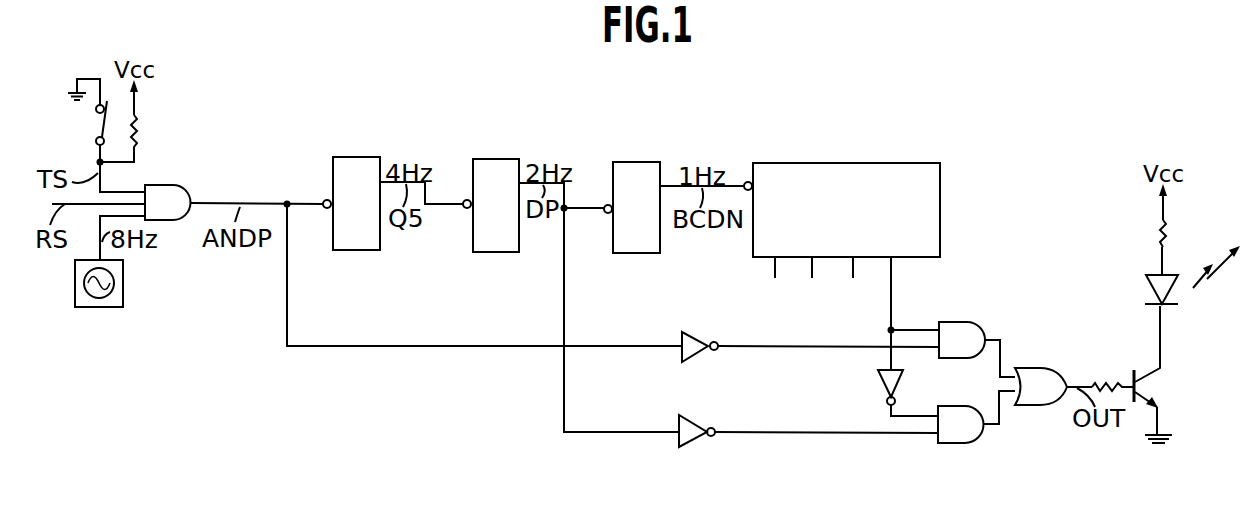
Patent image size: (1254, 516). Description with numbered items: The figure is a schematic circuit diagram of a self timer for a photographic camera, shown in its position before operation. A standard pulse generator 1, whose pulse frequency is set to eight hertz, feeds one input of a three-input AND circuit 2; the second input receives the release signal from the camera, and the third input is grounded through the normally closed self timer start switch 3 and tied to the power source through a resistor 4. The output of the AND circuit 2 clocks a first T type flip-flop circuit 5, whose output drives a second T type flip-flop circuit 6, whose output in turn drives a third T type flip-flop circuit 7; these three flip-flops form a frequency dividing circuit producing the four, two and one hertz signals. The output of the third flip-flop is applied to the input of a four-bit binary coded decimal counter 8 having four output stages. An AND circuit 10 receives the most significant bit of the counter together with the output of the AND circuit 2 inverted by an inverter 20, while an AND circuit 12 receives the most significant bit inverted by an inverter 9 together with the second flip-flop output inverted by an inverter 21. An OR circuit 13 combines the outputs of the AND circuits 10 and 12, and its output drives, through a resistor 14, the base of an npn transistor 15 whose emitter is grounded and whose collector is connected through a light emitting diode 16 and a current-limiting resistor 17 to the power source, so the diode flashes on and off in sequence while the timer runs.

The standard pulse generator 1 is at (123, 303).
The AND circuit 2 is at (170, 220).
The self timer start switch 3 is at (100, 122).
The resistor 4 is at (137, 125).
The first T type flip-flop circuit 5 is at (353, 157).
The second T type flip-flop circuit 6 is at (493, 159).
The third T type flip-flop circuit 7 is at (636, 162).
The binary coded decimal counter 8 is at (827, 163).
The inverter 9 is at (878, 377).
The AND circuit 10 is at (955, 328).
The AND circuit 12 is at (953, 443).
The OR circuit 13 is at (1035, 372).
The resistor 14 is at (1098, 380).
The npn transistor 15 is at (1148, 387).
The light emitting diode 16 is at (1152, 283).
The resistor 17 is at (1157, 232).
The inverter 20 is at (695, 333).
The inverter 21 is at (688, 437).